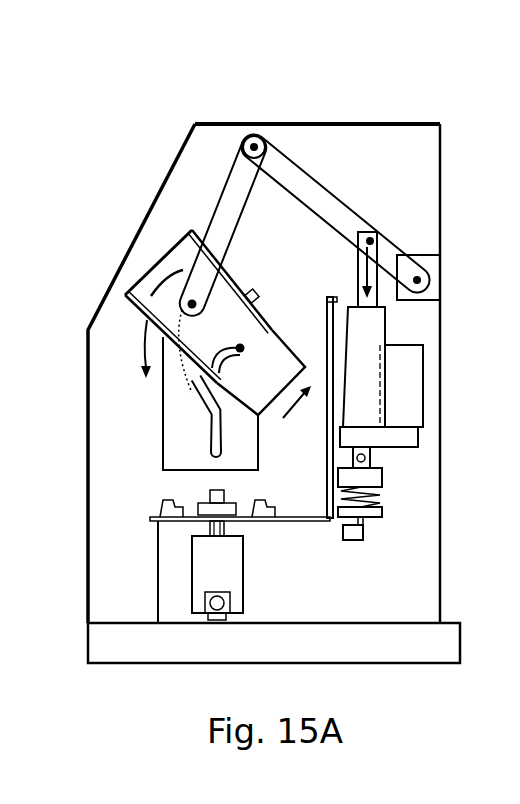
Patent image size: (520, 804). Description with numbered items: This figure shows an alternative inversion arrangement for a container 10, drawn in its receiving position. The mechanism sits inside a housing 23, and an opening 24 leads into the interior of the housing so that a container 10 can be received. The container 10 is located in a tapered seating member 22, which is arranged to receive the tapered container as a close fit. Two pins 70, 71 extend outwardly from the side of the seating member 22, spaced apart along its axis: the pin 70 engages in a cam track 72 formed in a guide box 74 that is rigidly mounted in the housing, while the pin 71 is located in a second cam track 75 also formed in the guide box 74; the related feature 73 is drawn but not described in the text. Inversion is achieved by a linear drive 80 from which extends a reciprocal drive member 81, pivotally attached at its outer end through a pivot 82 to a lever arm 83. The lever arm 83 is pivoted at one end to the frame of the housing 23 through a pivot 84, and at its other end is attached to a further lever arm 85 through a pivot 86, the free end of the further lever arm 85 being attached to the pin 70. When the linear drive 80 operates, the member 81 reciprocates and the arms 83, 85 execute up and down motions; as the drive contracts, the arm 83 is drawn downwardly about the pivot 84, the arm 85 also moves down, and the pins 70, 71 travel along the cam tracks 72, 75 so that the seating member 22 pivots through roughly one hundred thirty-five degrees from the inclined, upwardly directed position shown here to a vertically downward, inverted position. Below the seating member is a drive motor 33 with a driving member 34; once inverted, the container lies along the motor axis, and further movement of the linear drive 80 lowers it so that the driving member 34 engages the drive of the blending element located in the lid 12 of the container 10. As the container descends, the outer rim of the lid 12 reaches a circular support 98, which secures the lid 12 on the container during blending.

The container 10 is at (288, 347).
The lid 12 is at (166, 252).
The tapered seating member 22 is at (247, 283).
The housing 23 is at (250, 124).
The opening 24 is at (122, 249).
The drive motor 33 is at (243, 568).
The driving member 34 is at (203, 498).
The pin 70 is at (194, 307).
The pin 71 is at (243, 358).
The cam track 72 is at (221, 427).
The slot 73 is at (250, 462).
The guide box 74 is at (163, 430).
The cam track 75 is at (195, 383).
The linear drive 80 is at (373, 335).
The reciprocal drive member 81 is at (376, 243).
The pivot 82 is at (369, 229).
The lever arm 83 is at (308, 193).
The pivot 84 is at (428, 282).
The further lever arm 85 is at (230, 195).
The pivot 86 is at (268, 134).
The circular support 98 is at (263, 518).